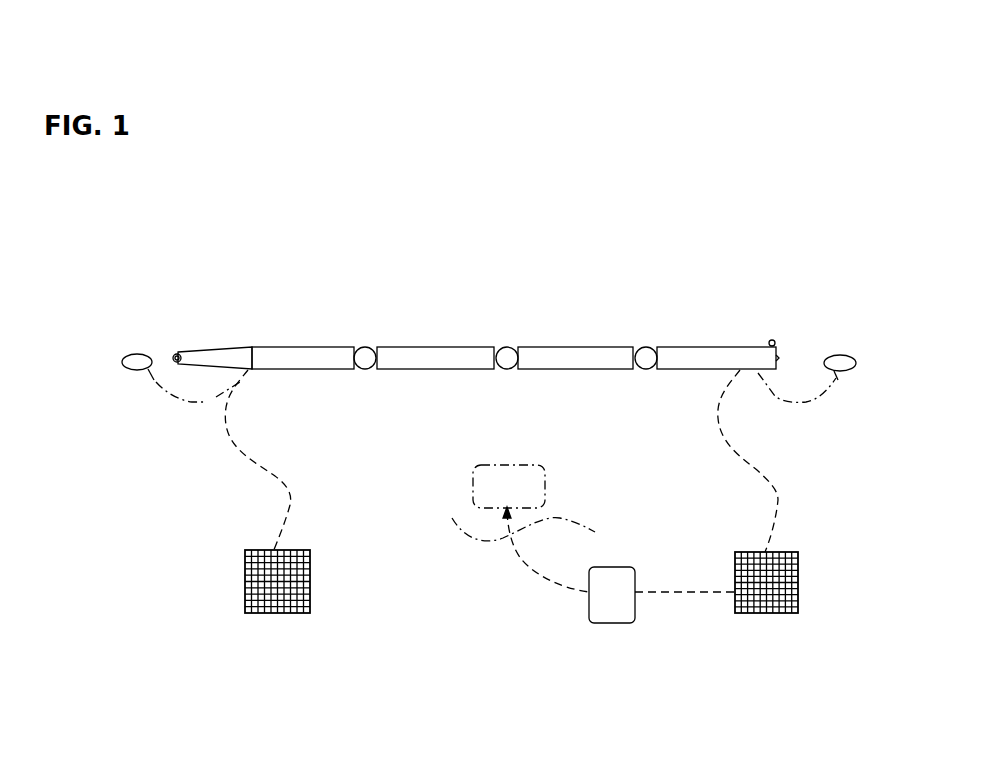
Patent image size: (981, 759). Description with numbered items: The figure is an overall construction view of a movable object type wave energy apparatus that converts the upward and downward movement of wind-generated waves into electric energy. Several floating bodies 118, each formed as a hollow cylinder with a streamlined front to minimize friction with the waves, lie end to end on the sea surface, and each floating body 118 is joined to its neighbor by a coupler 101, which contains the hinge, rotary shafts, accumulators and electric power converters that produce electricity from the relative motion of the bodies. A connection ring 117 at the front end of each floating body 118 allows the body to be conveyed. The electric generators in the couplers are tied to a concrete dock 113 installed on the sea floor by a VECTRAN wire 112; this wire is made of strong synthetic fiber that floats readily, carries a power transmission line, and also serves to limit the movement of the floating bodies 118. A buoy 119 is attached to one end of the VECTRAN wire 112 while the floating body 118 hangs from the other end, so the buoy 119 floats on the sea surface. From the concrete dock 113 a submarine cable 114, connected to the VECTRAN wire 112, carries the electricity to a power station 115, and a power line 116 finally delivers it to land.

The coupler 101 is at (507, 356).
The VECTRAN wire 112 is at (178, 398).
The concrete dock 113 is at (282, 605).
The submarine cable 114 is at (688, 594).
The power station 115 is at (611, 612).
The power line 116 is at (520, 560).
The connection ring 117 is at (172, 355).
The floating body 118 is at (418, 358).
The buoy 119 is at (125, 366).